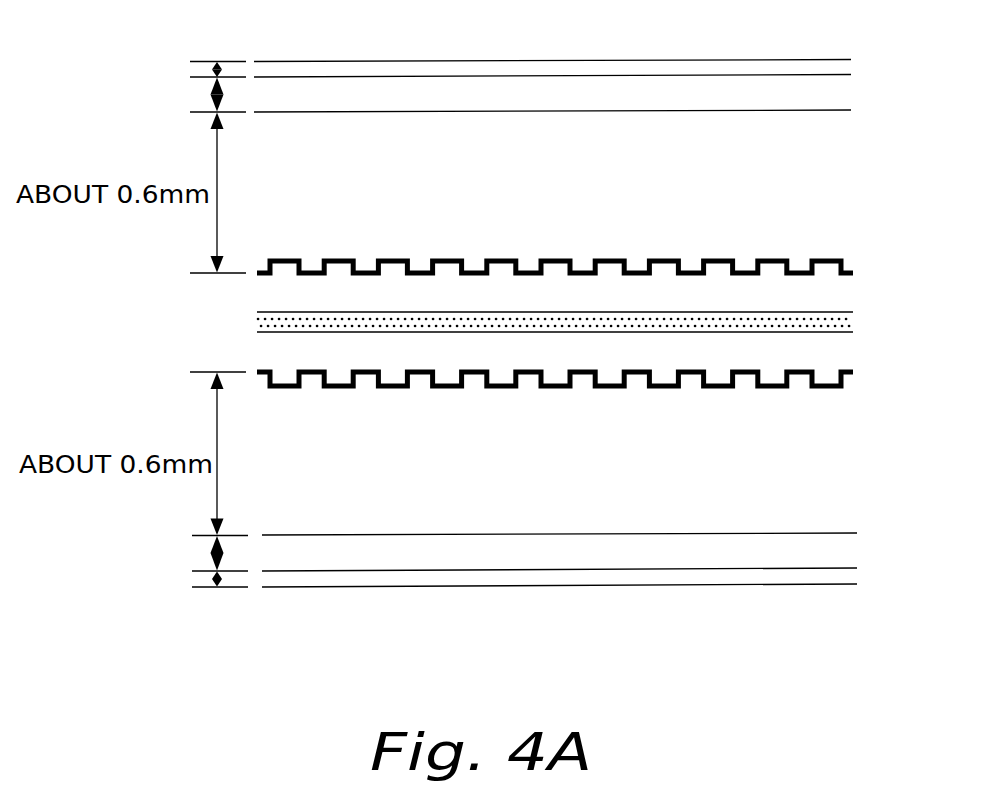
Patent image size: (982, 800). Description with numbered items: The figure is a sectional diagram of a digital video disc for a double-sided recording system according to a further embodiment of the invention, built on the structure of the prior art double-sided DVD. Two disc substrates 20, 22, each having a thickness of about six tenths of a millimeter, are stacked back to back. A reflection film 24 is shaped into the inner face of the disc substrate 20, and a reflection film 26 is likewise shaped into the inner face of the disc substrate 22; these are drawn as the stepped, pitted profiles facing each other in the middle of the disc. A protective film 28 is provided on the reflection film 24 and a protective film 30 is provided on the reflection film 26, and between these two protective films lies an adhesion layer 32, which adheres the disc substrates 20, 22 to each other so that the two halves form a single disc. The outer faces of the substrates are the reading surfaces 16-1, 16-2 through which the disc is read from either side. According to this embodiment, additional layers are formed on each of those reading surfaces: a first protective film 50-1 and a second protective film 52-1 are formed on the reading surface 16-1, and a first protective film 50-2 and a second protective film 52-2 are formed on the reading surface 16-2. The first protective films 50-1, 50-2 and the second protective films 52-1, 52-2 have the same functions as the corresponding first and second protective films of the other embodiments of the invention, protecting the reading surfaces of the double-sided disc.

The reading surface 16-1 is at (673, 110).
The reading surface 16-2 is at (678, 533).
The first protective film 50-1 is at (505, 83).
The first protective film 50-2 is at (513, 560).
The second protective film 52-1 is at (655, 67).
The second protective film 52-2 is at (663, 575).
The disc substrate 20 is at (457, 188).
The disc substrate 22 is at (462, 472).
The reflection film 24 is at (557, 257).
The reflection film 26 is at (560, 388).
The protective film 28 is at (624, 306).
The protective film 30 is at (667, 358).
The adhesion layer 32 is at (840, 318).